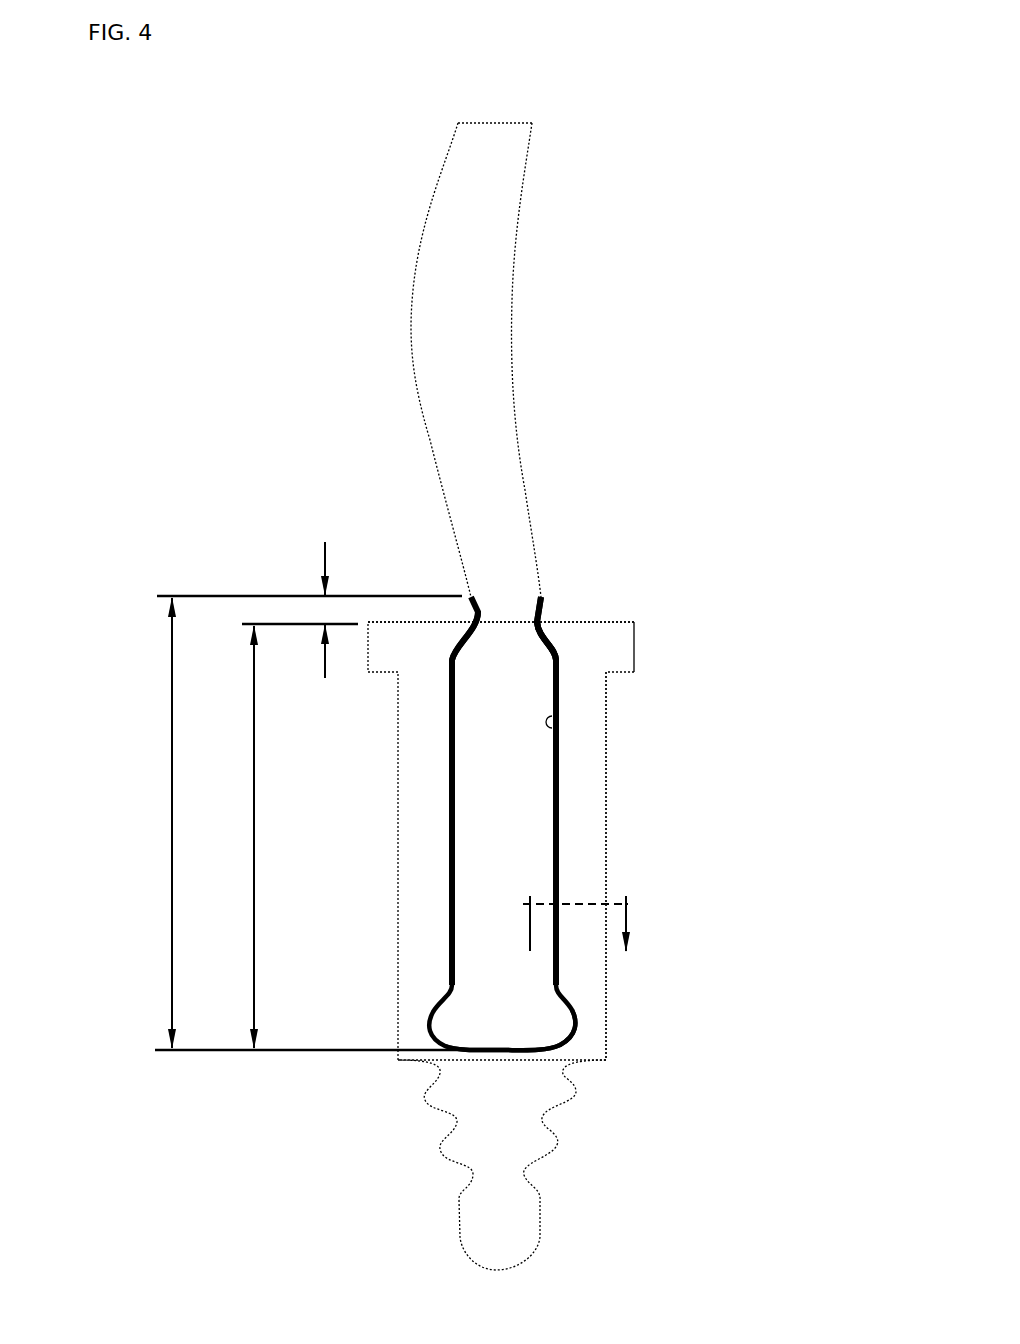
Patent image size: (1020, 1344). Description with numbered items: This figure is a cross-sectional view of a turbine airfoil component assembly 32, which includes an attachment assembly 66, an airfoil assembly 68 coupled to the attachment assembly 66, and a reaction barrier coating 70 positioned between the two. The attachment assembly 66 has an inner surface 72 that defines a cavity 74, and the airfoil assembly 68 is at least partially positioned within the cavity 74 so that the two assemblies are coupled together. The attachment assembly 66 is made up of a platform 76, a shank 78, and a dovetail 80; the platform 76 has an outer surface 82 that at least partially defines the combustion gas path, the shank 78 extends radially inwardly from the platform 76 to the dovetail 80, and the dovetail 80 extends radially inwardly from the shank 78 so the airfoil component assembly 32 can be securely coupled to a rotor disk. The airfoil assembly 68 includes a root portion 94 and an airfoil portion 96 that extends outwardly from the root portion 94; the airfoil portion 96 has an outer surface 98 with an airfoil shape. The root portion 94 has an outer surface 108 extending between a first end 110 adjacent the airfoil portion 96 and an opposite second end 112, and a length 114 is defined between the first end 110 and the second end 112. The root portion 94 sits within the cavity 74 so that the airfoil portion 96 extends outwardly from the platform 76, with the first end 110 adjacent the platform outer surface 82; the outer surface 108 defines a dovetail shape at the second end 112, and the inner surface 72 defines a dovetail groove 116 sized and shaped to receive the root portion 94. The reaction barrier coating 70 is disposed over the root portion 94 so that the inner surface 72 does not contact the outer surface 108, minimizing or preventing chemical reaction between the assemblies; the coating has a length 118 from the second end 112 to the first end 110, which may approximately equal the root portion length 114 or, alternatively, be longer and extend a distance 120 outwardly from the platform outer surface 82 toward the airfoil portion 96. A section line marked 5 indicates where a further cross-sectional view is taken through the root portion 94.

The airfoil component assembly 32 is at (687, 156).
The attachment assembly 66 is at (657, 786).
The airfoil assembly 68 is at (536, 360).
The reaction barrier coating 70 is at (560, 760).
The inner surface 72 is at (558, 708).
The cavity 74 is at (523, 659).
The platform 76 is at (635, 635).
The shank 78 is at (607, 815).
The dovetail 80 is at (578, 1102).
The outer surface 82 is at (613, 622).
The root portion 94 is at (520, 981).
The airfoil portion 96 is at (510, 483).
The outer surface 98 is at (500, 417).
The outer surface 108 is at (545, 853).
The first end 110 is at (543, 658).
The second end 112 is at (547, 1028).
The length 114 is at (255, 787).
The dovetail groove 116 is at (470, 1060).
The length 118 is at (171, 742).
The distance 120 is at (325, 548).
The section line 5- 5 is at (576, 914).